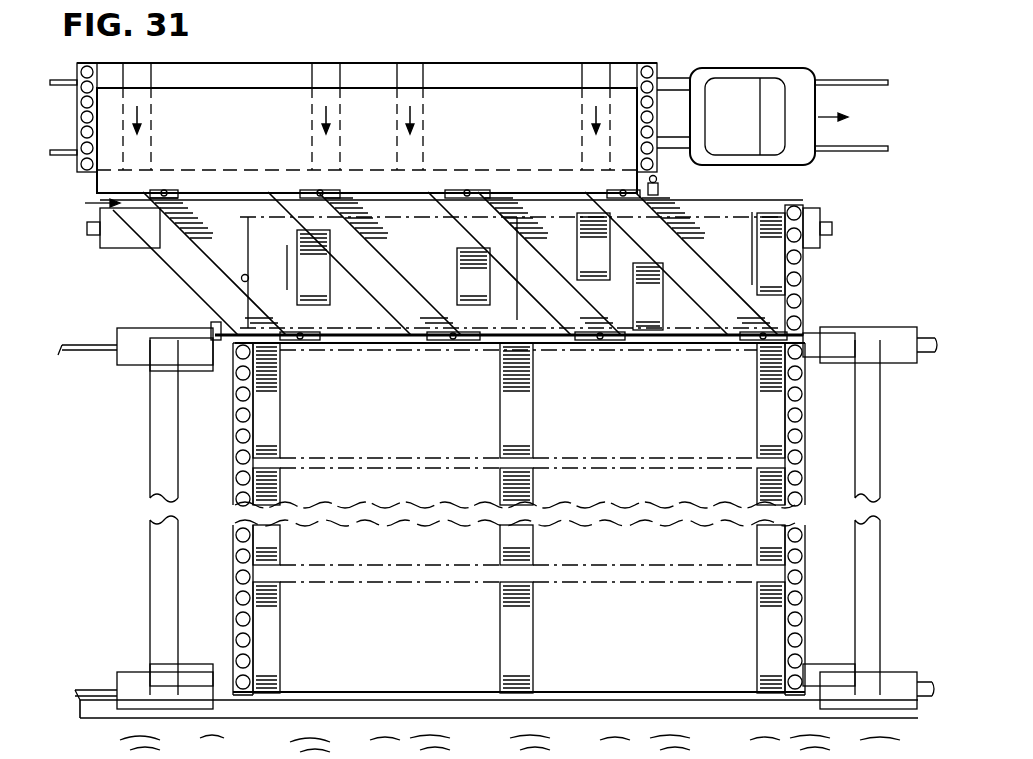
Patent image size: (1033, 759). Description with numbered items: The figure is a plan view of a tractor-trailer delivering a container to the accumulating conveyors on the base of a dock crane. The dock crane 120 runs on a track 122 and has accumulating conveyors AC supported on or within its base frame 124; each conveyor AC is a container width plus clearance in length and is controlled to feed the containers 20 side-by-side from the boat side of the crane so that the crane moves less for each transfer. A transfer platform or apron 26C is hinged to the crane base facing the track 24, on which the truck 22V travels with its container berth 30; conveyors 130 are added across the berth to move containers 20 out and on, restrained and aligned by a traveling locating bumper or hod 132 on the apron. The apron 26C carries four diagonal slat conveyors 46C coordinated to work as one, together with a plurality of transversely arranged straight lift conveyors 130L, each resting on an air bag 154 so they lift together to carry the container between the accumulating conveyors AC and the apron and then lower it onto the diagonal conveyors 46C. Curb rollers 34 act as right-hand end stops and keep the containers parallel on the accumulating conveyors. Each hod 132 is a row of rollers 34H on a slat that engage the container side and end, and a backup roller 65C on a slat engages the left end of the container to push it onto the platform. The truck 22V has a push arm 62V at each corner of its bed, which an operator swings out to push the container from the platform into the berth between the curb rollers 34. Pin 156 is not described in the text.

The container 20 is at (452, 90).
The truck 22V is at (240, 64).
The track 24 is at (867, 85).
The transfer platform or apron 26C is at (162, 257).
The container berth 30 is at (532, 72).
The curb rollers 34 is at (803, 560).
The rollers 34H is at (163, 193).
The diagonal slat conveyors 46C is at (742, 206).
The push arm 62V is at (673, 157).
The backup roller 65C is at (242, 281).
The dock crane 120 is at (140, 471).
The track 122 is at (106, 345).
The base frame 124 is at (158, 543).
The conveyors 130 is at (145, 82).
The straight lift conveyors 130L is at (330, 296).
The locating bumper or hod 132 is at (803, 314).
The air bag 154 is at (288, 268).
The locating pins 156 is at (660, 184).
The accumulating conveyors AC is at (267, 422).